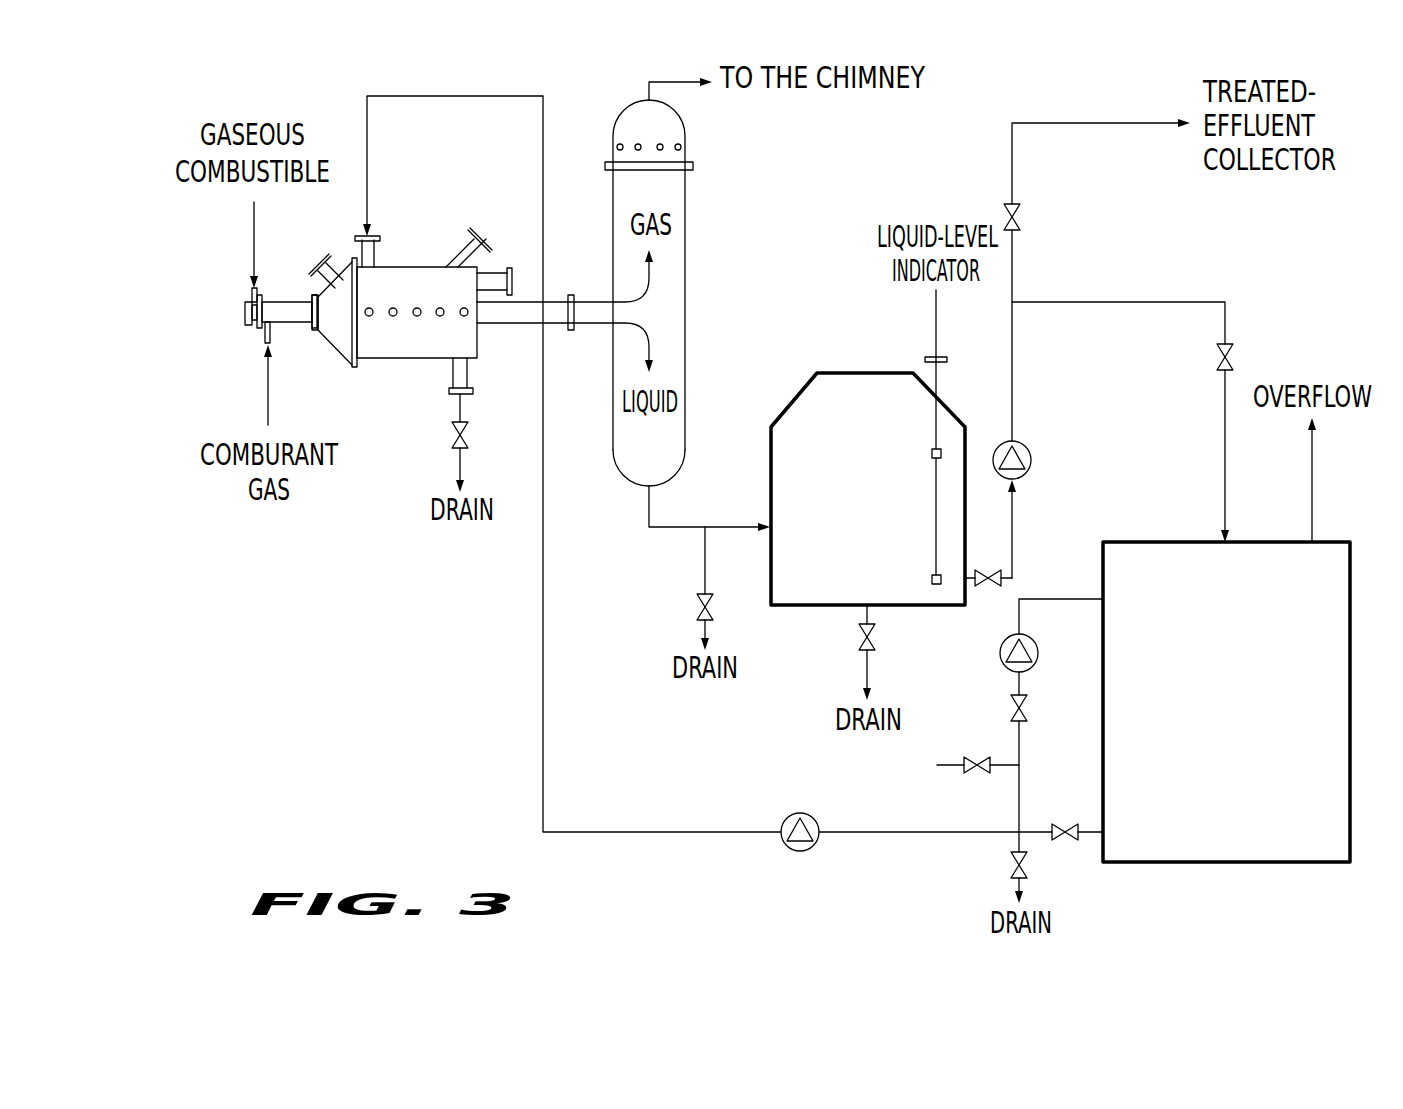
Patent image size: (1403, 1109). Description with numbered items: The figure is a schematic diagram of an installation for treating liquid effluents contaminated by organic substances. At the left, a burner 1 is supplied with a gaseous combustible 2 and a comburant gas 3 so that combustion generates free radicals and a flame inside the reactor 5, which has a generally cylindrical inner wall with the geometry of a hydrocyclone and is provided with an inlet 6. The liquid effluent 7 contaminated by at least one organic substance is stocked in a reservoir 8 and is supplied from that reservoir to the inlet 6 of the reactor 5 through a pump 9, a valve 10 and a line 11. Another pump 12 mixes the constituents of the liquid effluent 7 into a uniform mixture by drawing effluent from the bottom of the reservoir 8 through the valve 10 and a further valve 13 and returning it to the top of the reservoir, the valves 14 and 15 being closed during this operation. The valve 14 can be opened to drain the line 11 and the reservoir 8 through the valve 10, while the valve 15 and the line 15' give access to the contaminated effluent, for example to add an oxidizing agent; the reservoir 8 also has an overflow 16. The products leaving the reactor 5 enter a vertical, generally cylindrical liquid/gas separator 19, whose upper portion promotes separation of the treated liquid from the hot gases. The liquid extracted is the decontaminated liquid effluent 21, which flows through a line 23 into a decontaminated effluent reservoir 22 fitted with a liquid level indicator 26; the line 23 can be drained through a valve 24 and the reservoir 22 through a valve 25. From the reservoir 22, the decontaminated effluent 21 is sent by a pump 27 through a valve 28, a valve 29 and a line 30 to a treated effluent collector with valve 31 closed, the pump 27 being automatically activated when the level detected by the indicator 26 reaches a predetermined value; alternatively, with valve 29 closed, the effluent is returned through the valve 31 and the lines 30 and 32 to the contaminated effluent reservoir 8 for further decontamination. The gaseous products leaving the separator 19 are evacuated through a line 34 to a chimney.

The burner 1 is at (288, 303).
The gaseous combustible 2 is at (254, 213).
The comburant gas 3 is at (270, 410).
The reactor 5 is at (415, 258).
The inlet 6 is at (378, 252).
The liquid effluent 7 is at (1245, 828).
The reservoir 8 is at (1355, 830).
The pump 9 is at (800, 852).
The valve 10 is at (1072, 845).
The line 11 is at (543, 690).
The pump 12 is at (1005, 668).
The valve 13 is at (1010, 706).
The valve 14 is at (1010, 865).
The valve 15 is at (976, 790).
The line 15' is at (922, 759).
The overflow 16 is at (1315, 518).
The liquid/gas separator 19 is at (685, 314).
The decontaminated liquid effluent 21 is at (850, 575).
The decontaminated effluent reservoir 22 is at (808, 605).
The line 23 is at (649, 512).
The valve 24 is at (700, 607).
The valve 25 is at (875, 637).
The liquid level indicator 26 is at (940, 387).
The pump 27 is at (1035, 458).
The valve 28 is at (996, 588).
The valve 29 is at (1022, 215).
The line 30 is at (1013, 397).
The valve 31 is at (1232, 355).
The line 32 is at (1140, 302).
The line 34 is at (660, 78).